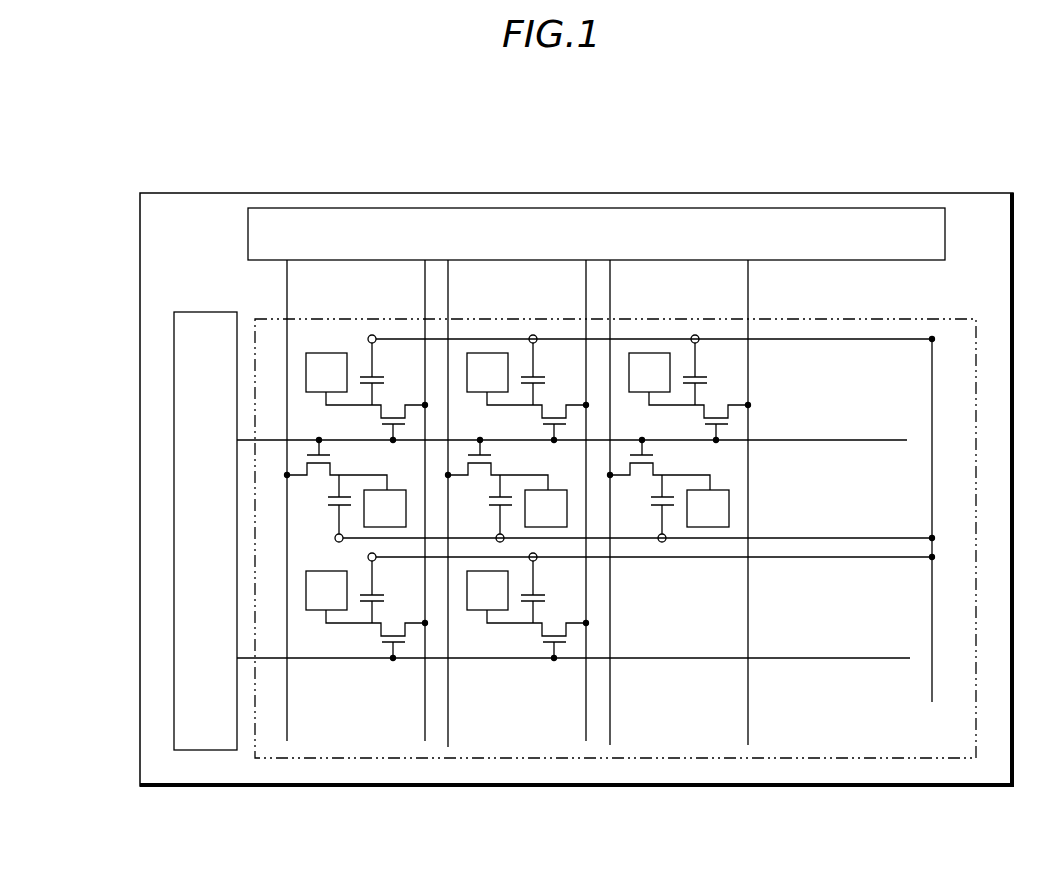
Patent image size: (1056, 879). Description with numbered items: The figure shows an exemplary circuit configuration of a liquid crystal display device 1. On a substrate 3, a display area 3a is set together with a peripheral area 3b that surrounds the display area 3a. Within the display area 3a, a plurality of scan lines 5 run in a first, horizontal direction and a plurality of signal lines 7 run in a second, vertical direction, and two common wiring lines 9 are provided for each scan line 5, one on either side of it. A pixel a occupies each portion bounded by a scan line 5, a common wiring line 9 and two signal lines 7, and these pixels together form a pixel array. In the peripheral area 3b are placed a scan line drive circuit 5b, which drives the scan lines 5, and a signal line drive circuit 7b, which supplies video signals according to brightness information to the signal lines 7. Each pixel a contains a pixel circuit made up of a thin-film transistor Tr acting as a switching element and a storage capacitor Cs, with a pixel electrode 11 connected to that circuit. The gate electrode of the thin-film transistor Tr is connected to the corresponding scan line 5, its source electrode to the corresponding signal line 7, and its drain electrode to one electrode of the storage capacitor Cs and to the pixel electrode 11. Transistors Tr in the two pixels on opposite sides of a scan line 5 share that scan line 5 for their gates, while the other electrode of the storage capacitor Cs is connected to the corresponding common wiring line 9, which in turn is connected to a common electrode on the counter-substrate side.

The liquid crystal display device 1 is at (211, 150).
The substrate 3 is at (682, 787).
The display area 3a is at (487, 760).
The peripheral area 3b is at (972, 248).
The scan line 5 is at (893, 440).
The scan line drive circuit 5b is at (188, 312).
The signal line 7 is at (287, 723).
The signal line drive circuit 7b is at (822, 208).
The common wiring line 9 is at (889, 338).
The pixel electrode 11 is at (641, 353).
The pixel a is at (342, 337).
The storage capacitor Cs is at (715, 380).
The thin-film transistor Tr is at (733, 420).